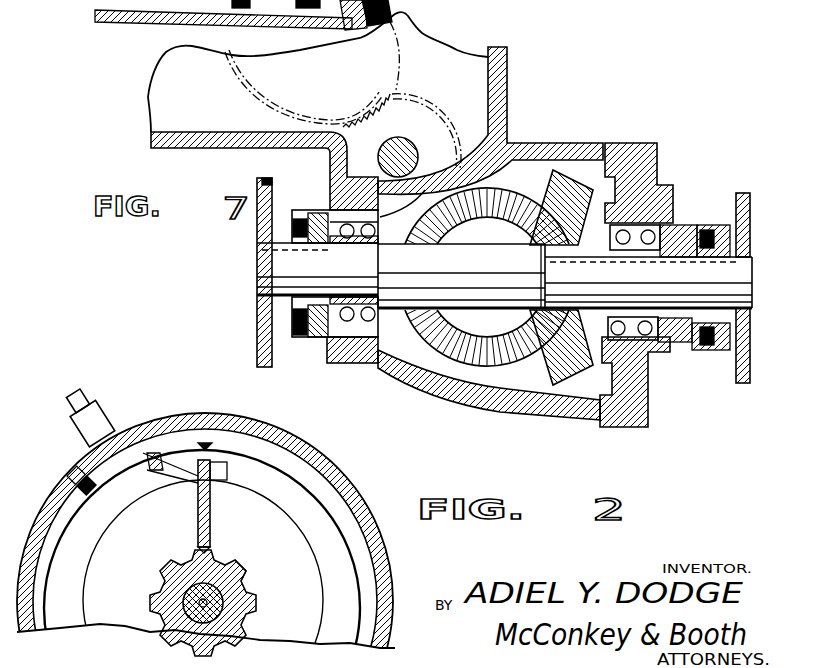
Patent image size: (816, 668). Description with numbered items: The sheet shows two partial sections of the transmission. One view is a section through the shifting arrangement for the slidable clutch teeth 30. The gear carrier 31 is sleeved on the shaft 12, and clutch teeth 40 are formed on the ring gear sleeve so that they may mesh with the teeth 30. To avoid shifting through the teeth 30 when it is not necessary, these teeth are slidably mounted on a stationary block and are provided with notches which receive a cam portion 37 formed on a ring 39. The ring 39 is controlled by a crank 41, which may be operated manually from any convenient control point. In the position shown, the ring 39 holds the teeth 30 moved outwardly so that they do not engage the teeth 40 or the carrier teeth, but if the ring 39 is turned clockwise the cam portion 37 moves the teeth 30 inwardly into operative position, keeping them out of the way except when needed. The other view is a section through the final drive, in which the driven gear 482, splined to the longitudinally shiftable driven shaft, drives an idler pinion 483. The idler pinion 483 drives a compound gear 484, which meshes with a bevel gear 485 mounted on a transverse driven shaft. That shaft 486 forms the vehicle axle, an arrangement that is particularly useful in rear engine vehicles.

In FIG. 7, the driven gear 482 is at (372, 53).
In FIG. 7, the idler pinion 483 is at (410, 110).
In FIG. 7, the compound gear 484 is at (490, 192).
In FIG. 7, the bevel gear 485 is at (587, 182).
In FIG. 7, the shaft 486 is at (748, 284).
In FIG. 2, the shaft 12 is at (247, 617).
In FIG. 2, the teeth 30 is at (213, 500).
In FIG. 2, the gear carrier 31 is at (230, 573).
In FIG. 2, the cam portion 37 is at (170, 470).
In FIG. 2, the ring 39 is at (310, 515).
In FIG. 2, the clutch teeth 40 is at (248, 580).
In FIG. 2, the crank 41 is at (82, 413).